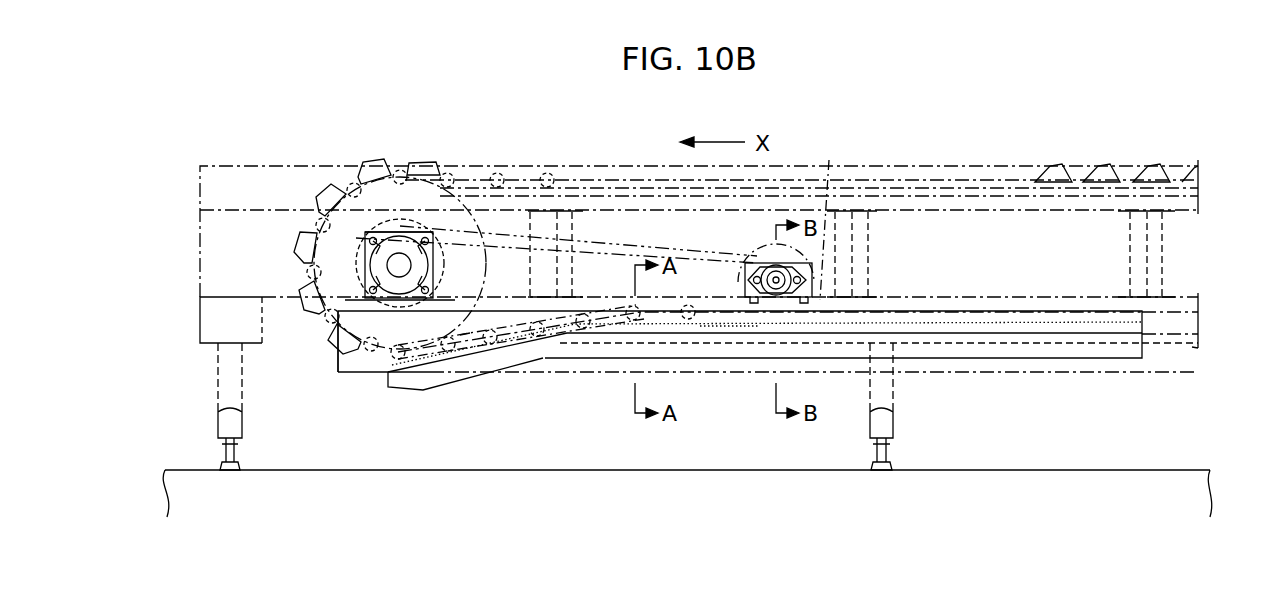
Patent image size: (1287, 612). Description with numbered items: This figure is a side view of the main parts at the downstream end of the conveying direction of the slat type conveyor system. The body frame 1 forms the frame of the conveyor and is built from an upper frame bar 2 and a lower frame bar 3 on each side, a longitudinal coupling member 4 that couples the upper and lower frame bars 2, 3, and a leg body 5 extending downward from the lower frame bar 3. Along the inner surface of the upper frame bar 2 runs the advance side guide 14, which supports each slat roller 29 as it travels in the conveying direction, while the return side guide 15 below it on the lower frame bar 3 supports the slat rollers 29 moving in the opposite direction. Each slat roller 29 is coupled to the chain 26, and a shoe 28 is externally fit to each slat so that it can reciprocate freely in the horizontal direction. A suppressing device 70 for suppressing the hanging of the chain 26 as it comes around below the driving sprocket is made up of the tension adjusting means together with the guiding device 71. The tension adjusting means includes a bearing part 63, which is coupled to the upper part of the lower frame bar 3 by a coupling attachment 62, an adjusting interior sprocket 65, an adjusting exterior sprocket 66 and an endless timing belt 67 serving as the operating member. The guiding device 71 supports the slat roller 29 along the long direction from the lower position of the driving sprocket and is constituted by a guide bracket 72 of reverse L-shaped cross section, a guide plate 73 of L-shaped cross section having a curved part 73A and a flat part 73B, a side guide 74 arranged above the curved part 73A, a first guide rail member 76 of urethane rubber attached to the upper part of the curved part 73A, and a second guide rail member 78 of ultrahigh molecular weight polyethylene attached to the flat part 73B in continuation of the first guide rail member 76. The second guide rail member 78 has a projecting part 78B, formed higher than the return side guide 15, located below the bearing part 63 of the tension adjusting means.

The body frame 1 is at (666, 231).
The upper frame bar 2 is at (240, 165).
The lower frame bar 3 is at (210, 312).
The longitudinal coupling member 4 is at (1160, 266).
The leg body 5 is at (226, 425).
The advance side guide 14 is at (915, 190).
The return side guide 15 is at (1150, 318).
The chain 26 is at (1005, 182).
The shoe 28 is at (1150, 168).
The slat roller 29 is at (552, 173).
The coupling attachment 62 is at (812, 285).
The bearing part 63 is at (812, 268).
The adjusting interior sprocket 65 is at (822, 178).
The adjusting exterior sprocket 66 is at (757, 257).
The endless timing belt 67 is at (584, 238).
The suppressing device 70 is at (560, 380).
The guiding device 71 is at (1112, 383).
The guide bracket 72 is at (1068, 376).
The guide plate 73 is at (752, 392).
The curved part 73A is at (402, 386).
The flat part 73B is at (924, 352).
The side guide 74 is at (345, 360).
The first guide rail member 76 is at (468, 366).
The second guide rail member 78 is at (1030, 332).
The projecting part 78B is at (773, 323).